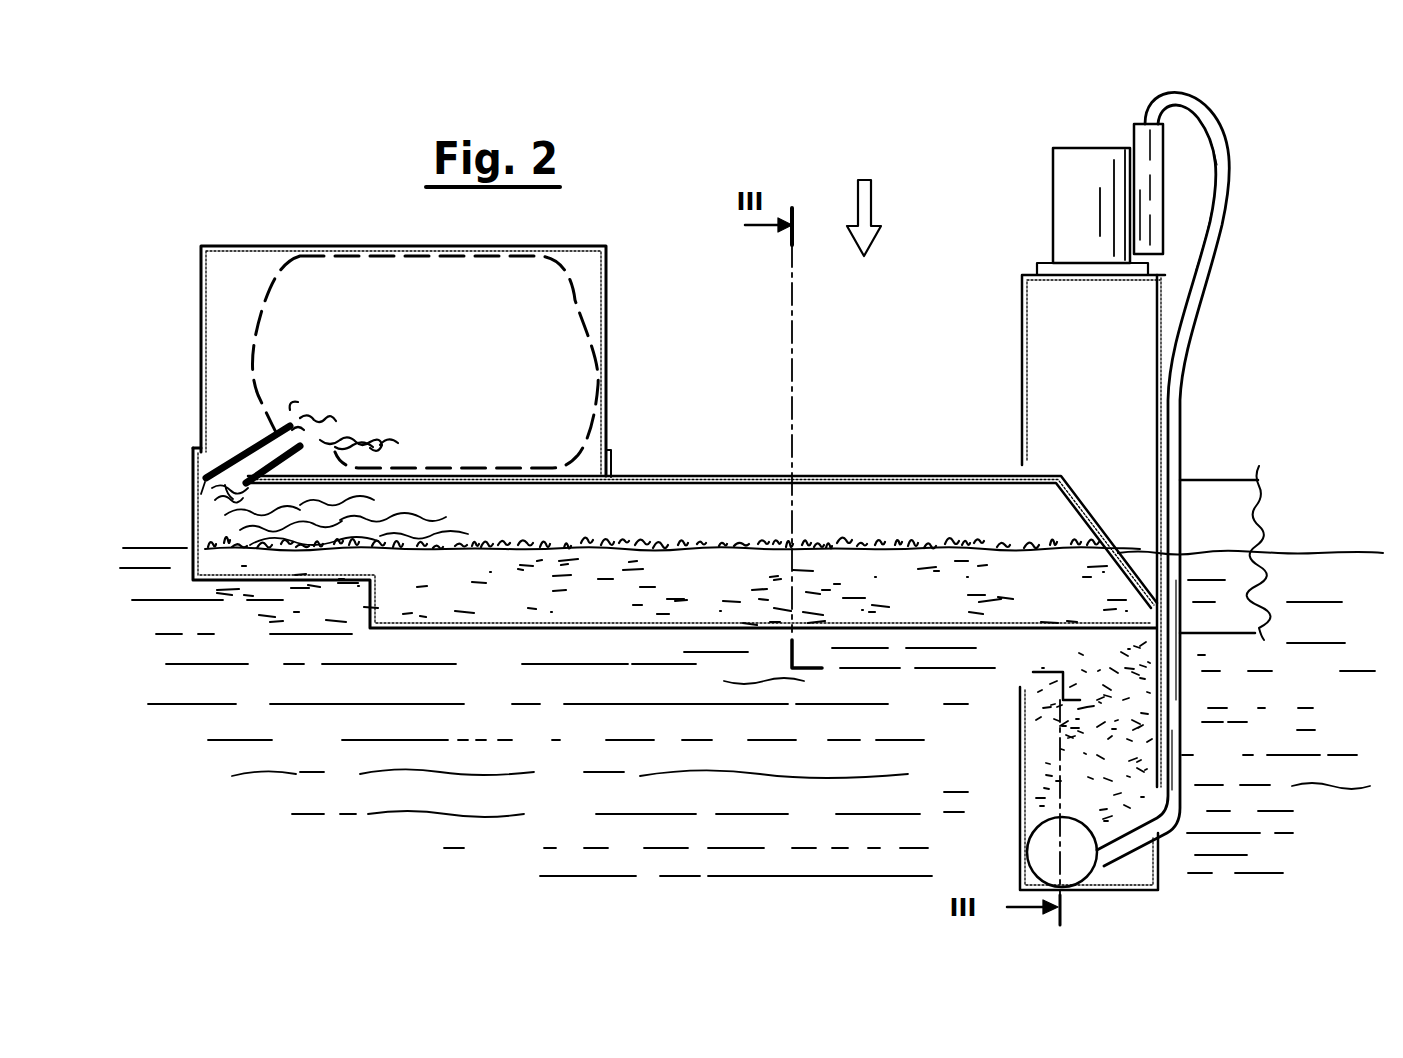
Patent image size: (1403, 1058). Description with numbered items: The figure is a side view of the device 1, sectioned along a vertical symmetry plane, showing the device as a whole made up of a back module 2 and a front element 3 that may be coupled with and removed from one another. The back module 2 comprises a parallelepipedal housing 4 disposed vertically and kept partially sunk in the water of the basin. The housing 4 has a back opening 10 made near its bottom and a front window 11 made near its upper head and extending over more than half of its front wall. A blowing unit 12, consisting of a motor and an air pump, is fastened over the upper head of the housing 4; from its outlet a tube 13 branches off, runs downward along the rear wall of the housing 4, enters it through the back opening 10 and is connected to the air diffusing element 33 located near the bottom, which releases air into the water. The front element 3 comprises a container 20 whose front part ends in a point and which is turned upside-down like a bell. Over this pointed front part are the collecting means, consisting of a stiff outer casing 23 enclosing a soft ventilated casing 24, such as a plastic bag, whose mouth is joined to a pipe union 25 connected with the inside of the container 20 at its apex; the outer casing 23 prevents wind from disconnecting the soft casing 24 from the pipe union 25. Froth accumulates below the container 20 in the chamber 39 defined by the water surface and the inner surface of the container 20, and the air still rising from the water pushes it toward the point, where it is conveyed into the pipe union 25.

The device 1 is at (864, 200).
The back module 2 is at (1200, 345).
The front element 3 is at (699, 446).
The housing 4 is at (1163, 298).
The back opening 10 is at (1134, 871).
The front window 11 is at (1008, 386).
The blowing unit 12 is at (1060, 218).
The tube 13 is at (1178, 420).
The container 20 is at (838, 476).
The stiff outer casing 23 is at (237, 243).
The soft ventilated casing 24 is at (278, 285).
The pipe union 25 is at (250, 447).
The air diffusing element 33 is at (1036, 820).
The chamber 39 is at (682, 525).